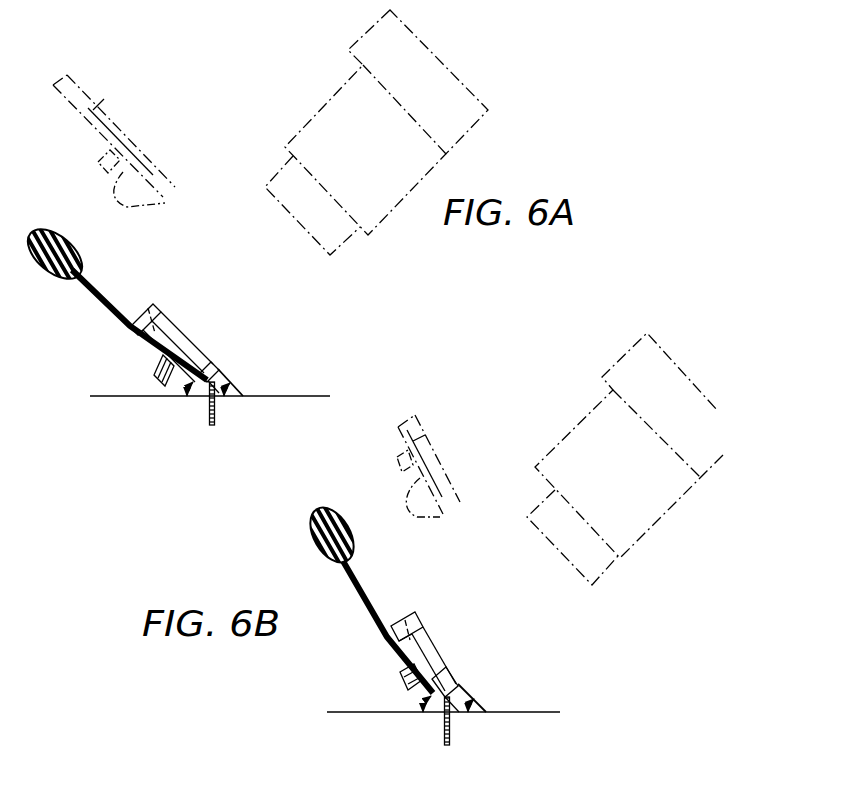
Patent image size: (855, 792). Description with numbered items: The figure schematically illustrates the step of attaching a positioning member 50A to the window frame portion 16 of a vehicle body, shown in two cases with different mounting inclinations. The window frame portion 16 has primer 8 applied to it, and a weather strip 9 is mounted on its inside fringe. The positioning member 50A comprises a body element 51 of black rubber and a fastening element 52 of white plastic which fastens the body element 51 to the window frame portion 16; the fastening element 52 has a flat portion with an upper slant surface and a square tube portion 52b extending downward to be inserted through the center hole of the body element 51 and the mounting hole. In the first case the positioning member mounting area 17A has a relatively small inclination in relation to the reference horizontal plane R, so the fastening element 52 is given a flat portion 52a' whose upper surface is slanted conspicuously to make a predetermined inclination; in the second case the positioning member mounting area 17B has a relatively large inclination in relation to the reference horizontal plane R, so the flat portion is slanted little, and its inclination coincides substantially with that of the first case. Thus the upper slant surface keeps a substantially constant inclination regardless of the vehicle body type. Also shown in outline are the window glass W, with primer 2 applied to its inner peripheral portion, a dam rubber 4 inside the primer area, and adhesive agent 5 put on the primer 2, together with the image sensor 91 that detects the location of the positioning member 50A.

In FIG. 6A, the primer 2 is at (167, 203).
In FIG. 6B, the primer 2 is at (446, 512).
In FIG. 6A, the dam rubber 4 is at (100, 155).
In FIG. 6B, the dam rubber 4 is at (398, 456).
In FIG. 6A, the adhesive agent 5 is at (120, 208).
In FIG. 6B, the adhesive agent 5 is at (408, 500).
In FIG. 6A, the window glass W is at (101, 105).
In FIG. 6B, the window glass W is at (424, 434).
In FIG. 6A, the primer 8 is at (124, 322).
In FIG. 6B, the primer 8 is at (367, 622).
In FIG. 6A, the weather strip 9 is at (57, 228).
In FIG. 6B, the weather strip 9 is at (338, 508).
In FIG. 6A, the window frame portion 16 is at (113, 286).
In FIG. 6B, the window frame portion 16 is at (358, 593).
In FIG. 6A, the positioning member mounting area 17A is at (184, 366).
In FIG. 6B, the positioning member mounting area 17B is at (440, 668).
In FIG. 6A, the positioning member 50A is at (238, 345).
In FIG. 6B, the positioning member 50A is at (470, 663).
In FIG. 6A, the body element 51 is at (150, 304).
In FIG. 6B, the body element 51 is at (405, 615).
In FIG. 6A, the fastening element 52 is at (220, 367).
In FIG. 6B, the fastening element 52 is at (462, 671).
In FIG. 6A, the flat portion 52a' is at (175, 337).
In FIG. 6A, the square tube portion 52b is at (161, 370).
In FIG. 6B, the square tube portion 52b is at (401, 682).
In FIG. 6A, the image sensor 91 is at (312, 117).
In FIG. 6B, the image sensor 91 is at (558, 440).
In FIG. 6A, the reference horizontal plane R is at (315, 394).
In FIG. 6B, the reference horizontal plane R is at (545, 710).